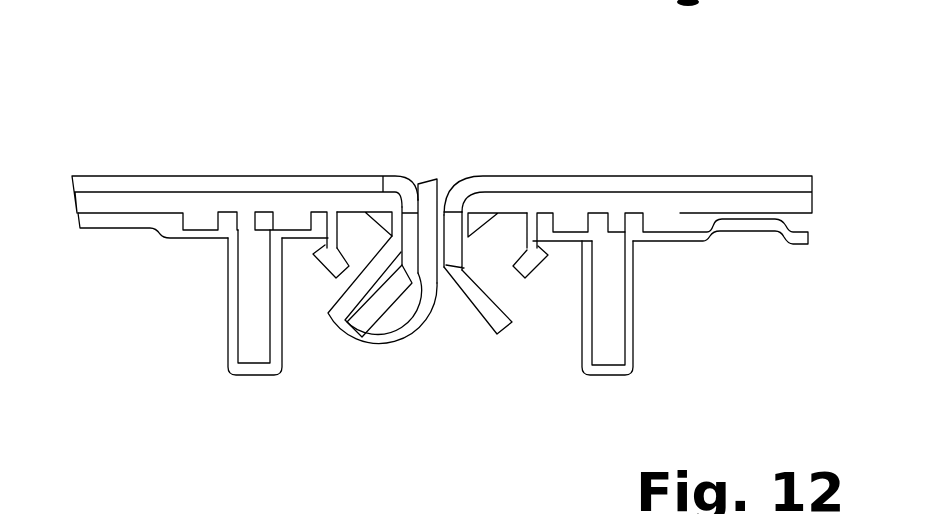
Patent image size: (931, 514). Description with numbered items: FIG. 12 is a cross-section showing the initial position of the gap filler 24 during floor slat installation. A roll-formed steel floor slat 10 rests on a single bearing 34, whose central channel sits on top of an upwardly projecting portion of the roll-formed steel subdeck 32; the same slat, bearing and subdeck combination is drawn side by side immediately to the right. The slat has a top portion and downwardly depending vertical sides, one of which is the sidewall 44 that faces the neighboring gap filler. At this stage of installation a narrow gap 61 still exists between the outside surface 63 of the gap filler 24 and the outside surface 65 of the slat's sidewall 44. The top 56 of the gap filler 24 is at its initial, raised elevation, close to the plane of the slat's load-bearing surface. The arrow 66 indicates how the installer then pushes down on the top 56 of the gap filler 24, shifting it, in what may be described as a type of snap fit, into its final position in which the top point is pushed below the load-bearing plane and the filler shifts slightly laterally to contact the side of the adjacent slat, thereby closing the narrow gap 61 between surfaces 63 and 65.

The floor slat 10 is at (143, 177).
The gap filler 24 is at (396, 348).
The steel subdeck 32 is at (248, 376).
The bearing 34 is at (205, 200).
The sidewall 44 is at (450, 252).
The top of the gap filler 56 is at (419, 180).
The narrow gap 61 is at (445, 187).
The outside surface of the gap filler 63 is at (460, 203).
The outside surface of the sidewall 65 is at (458, 225).
The arrow indicating push-down direction 66 is at (428, 170).